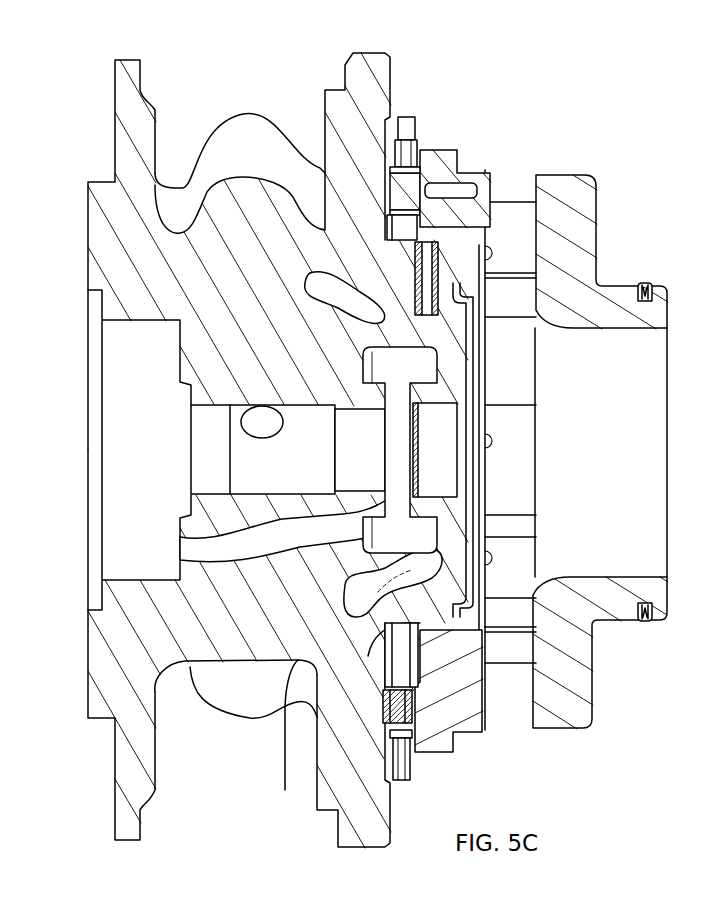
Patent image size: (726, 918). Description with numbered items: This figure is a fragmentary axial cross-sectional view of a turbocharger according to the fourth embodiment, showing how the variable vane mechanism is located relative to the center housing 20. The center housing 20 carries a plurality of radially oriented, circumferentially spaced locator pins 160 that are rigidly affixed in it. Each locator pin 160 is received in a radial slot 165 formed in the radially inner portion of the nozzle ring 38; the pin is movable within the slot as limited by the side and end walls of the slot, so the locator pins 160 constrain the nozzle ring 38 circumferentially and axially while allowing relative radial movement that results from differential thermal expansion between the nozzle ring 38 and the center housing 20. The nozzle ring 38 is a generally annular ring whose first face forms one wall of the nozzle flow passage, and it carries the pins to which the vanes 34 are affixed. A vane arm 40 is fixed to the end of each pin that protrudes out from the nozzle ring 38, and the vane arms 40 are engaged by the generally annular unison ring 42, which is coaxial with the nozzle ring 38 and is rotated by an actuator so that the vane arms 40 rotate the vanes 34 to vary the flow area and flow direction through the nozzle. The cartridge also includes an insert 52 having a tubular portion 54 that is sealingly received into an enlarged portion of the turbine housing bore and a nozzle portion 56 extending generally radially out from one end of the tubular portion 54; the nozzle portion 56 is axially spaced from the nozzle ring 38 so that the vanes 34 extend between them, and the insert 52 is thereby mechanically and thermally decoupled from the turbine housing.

The center housing 20 is at (333, 647).
The locator pin 160 is at (322, 232).
The vane arm 40 is at (345, 541).
The vane 34 is at (507, 294).
The nozzle ring 38 is at (447, 688).
The unison ring 42 is at (407, 137).
The radial slot 165 is at (433, 232).
The insert 52 is at (606, 432).
The nozzle portion 56 is at (582, 202).
The tubular portion 54 is at (623, 323).